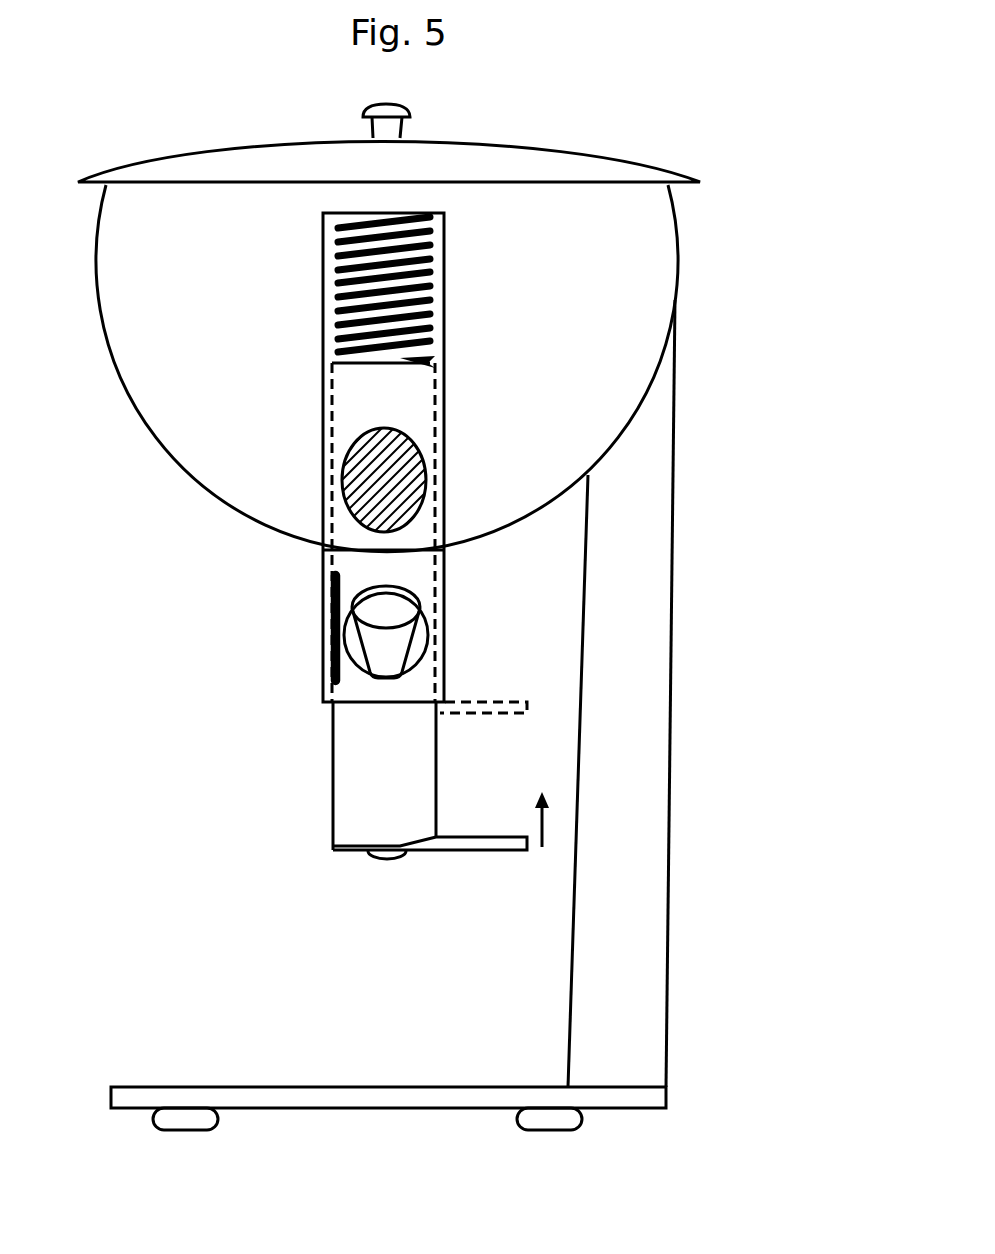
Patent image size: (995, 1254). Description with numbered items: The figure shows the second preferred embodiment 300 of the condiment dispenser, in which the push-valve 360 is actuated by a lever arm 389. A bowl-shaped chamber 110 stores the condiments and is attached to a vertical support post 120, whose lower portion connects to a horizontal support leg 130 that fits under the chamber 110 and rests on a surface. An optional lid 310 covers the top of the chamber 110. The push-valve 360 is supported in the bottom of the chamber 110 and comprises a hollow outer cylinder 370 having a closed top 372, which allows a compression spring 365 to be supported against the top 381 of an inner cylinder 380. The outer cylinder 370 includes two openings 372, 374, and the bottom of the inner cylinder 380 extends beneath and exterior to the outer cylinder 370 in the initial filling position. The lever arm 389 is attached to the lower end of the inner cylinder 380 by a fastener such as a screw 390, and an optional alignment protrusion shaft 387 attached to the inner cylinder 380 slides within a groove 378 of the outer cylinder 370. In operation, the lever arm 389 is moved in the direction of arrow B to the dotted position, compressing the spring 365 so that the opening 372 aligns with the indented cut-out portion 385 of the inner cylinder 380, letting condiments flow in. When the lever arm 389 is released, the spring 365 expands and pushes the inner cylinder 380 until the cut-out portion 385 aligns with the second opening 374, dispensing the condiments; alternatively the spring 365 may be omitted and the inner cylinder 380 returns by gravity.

The second preferred embodiment 300 is at (97, 68).
The lid 310 is at (632, 162).
The chamber 110 is at (138, 418).
The vertical support post 120 is at (668, 732).
The horizontal support leg 130 is at (405, 1108).
The push-valve 360 is at (270, 376).
The compression spring 365 is at (443, 253).
The hollow outer cylinder 370 is at (445, 300).
The closed top / first opening of outer cylinder 372 is at (360, 215).
The second opening 374 is at (400, 587).
The groove 378 is at (323, 565).
The inner cylinder 380 is at (343, 795).
The top of inner cylinder 381 is at (385, 363).
The indented cut-out portion 385 is at (410, 630).
The alignment protrusion shaft 387 is at (328, 668).
The lever arm 389 is at (493, 715).
The screw 390 is at (388, 858).